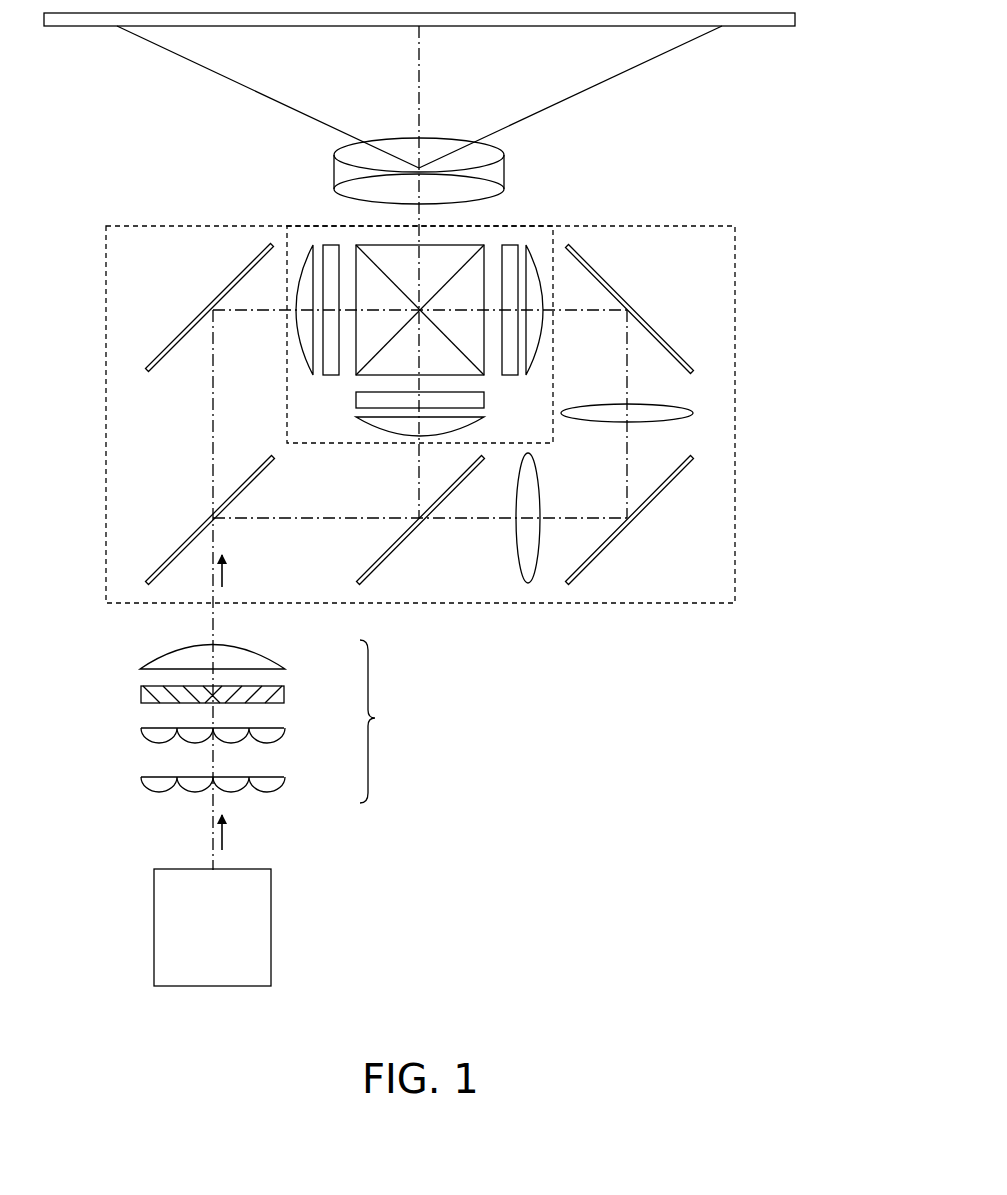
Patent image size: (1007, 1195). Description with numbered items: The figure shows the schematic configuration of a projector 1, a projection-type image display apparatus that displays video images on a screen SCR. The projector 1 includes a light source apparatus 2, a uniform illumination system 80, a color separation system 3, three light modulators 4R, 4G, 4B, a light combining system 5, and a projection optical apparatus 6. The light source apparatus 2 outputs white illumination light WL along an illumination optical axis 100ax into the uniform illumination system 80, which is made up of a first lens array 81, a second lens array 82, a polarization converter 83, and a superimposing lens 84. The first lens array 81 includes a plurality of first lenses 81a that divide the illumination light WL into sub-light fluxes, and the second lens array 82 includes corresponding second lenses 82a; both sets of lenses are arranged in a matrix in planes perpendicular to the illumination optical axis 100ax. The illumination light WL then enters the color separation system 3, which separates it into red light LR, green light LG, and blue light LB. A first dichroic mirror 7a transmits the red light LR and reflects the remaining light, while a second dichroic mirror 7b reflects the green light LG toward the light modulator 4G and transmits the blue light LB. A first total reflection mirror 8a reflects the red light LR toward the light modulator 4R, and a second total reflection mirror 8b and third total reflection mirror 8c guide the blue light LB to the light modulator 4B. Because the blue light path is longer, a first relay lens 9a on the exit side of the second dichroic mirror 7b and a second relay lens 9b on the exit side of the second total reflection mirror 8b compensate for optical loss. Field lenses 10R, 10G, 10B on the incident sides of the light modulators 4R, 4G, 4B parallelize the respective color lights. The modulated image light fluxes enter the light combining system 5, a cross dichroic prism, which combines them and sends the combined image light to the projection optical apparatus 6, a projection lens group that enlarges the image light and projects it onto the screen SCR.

The projector 1 is at (744, 206).
The light source apparatus 2 is at (272, 930).
The color separation system 3 is at (105, 363).
The light combining system 5 is at (443, 253).
The projection optical apparatus 6 is at (405, 150).
The light modulator 4R is at (331, 245).
The light modulator 4G is at (362, 400).
The light modulator 4B is at (510, 245).
The field lens 10R is at (307, 245).
The field lens 10G is at (360, 423).
The field lens 10B is at (532, 245).
The first dichroic mirror 7a is at (178, 548).
The second dichroic mirror 7b is at (402, 553).
The first total reflection mirror 8a is at (187, 323).
The second total reflection mirror 8b is at (650, 506).
The third total reflection mirror 8c is at (654, 327).
The first relay lens 9a is at (516, 538).
The second relay lens 9b is at (694, 411).
The uniform illumination system 80 is at (232, 721).
The first lens array 81 is at (285, 784).
The first lens 81a is at (153, 787).
The second lens array 82 is at (285, 735).
The second lens 82a is at (153, 738).
The polarization converter 83 is at (285, 690).
The superimposing lens 84 is at (276, 652).
The illumination optical axis 100ax is at (211, 846).
The screen SCR is at (762, 30).
The illumination light WL is at (224, 576).
The red light LR is at (212, 434).
The green light LG is at (418, 480).
The blue light LB is at (626, 472).